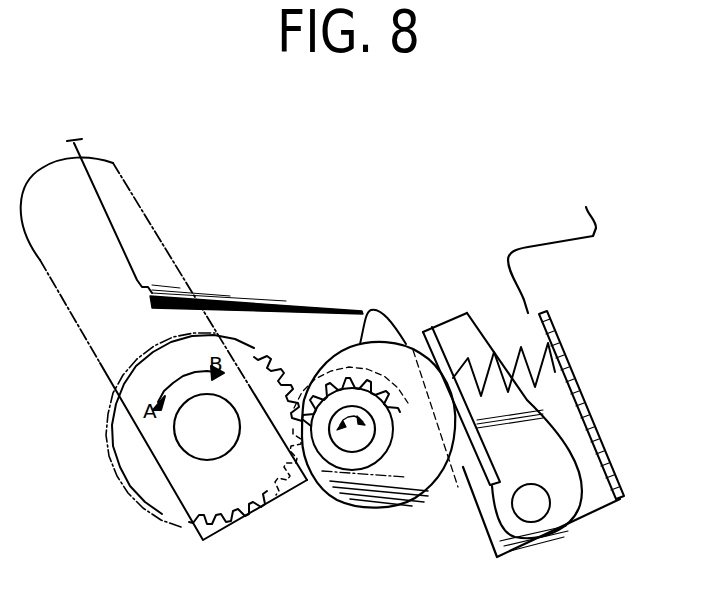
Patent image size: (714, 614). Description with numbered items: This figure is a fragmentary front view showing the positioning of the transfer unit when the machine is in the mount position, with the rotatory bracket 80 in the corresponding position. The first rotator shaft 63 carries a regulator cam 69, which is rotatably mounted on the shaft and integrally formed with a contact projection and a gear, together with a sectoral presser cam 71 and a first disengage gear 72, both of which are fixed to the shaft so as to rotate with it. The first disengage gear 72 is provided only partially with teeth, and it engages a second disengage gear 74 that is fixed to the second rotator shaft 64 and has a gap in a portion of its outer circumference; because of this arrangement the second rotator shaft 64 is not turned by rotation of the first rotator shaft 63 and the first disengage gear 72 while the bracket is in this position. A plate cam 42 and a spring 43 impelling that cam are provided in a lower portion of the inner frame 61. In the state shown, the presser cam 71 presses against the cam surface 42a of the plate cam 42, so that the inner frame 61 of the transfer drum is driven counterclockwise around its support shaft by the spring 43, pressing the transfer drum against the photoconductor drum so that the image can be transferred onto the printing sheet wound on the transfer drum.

The rotatory bracket 80 is at (152, 228).
The second disengage gear 74 is at (157, 478).
The second rotator shaft 64 is at (195, 433).
The presser cam 71 is at (372, 312).
The first disengage gear 72 is at (348, 460).
The first rotator shaft 63 is at (357, 430).
The regulator cam 69 is at (437, 457).
The cam surface 42a is at (423, 332).
The plate cam 42 is at (558, 461).
The spring 43 is at (515, 378).
The inner frame 61 is at (565, 236).